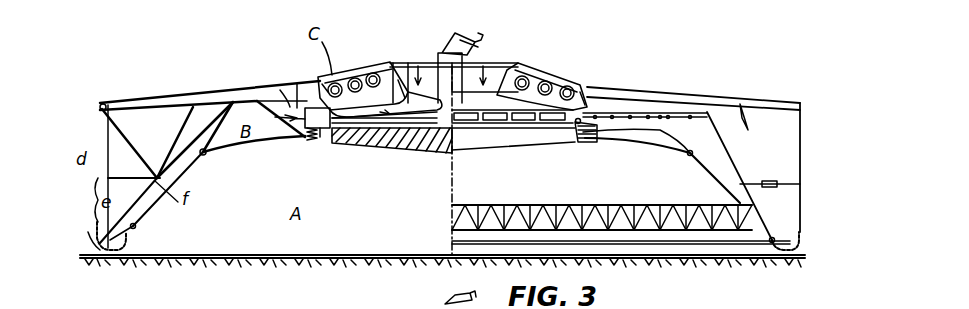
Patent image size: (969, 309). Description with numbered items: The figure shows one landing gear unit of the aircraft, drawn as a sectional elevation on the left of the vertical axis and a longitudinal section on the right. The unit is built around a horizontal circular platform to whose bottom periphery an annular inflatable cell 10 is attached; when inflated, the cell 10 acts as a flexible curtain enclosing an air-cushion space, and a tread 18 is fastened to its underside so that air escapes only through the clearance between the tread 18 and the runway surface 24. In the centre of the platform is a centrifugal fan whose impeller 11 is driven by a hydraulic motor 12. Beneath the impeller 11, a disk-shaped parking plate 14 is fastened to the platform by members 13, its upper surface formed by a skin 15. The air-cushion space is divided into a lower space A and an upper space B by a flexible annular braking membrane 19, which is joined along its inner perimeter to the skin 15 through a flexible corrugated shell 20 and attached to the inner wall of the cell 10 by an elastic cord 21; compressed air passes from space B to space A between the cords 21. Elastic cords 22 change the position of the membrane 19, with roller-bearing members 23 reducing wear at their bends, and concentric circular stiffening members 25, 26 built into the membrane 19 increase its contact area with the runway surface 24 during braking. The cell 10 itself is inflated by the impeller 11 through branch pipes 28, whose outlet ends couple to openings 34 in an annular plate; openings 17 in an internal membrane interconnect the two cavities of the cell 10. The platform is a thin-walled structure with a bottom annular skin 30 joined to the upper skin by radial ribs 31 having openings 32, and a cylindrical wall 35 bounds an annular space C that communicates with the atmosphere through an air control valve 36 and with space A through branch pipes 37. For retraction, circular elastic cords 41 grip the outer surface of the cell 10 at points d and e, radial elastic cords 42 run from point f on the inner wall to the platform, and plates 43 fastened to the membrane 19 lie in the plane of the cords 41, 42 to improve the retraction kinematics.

The annular inflatable cell 10 is at (800, 140).
The impeller 11 is at (357, 120).
The hydraulic motor 12 is at (445, 52).
The members 13 is at (586, 100).
The parking plate 14 is at (405, 147).
The skin 15 is at (324, 134).
The openings 17 is at (778, 186).
The tread 18 is at (110, 260).
The flexible annular braking membrane 19 is at (242, 136).
The flexible corrugated shell 20 is at (312, 140).
The elastic cord 21 is at (180, 216).
The elastic cords 22 is at (257, 88).
The roller-bearing members 23 is at (205, 156).
The runway surface 24 is at (726, 262).
The concentric circular stiffening member 25 is at (688, 157).
The concentric circular stiffening member 26 is at (592, 145).
The branch pipes 28 is at (658, 112).
The bottom annular skin 30 is at (380, 64).
The radial ribs 31 is at (540, 75).
The openings 32 is at (325, 86).
The openings 34 is at (744, 105).
The cylindrical wall 35 is at (297, 84).
The air control valve 36 is at (345, 80).
The branch pipes 37 is at (290, 107).
The circular elastic cords 41 is at (92, 200).
The radial elastic cords 42 is at (103, 104).
The plates 43 is at (126, 178).